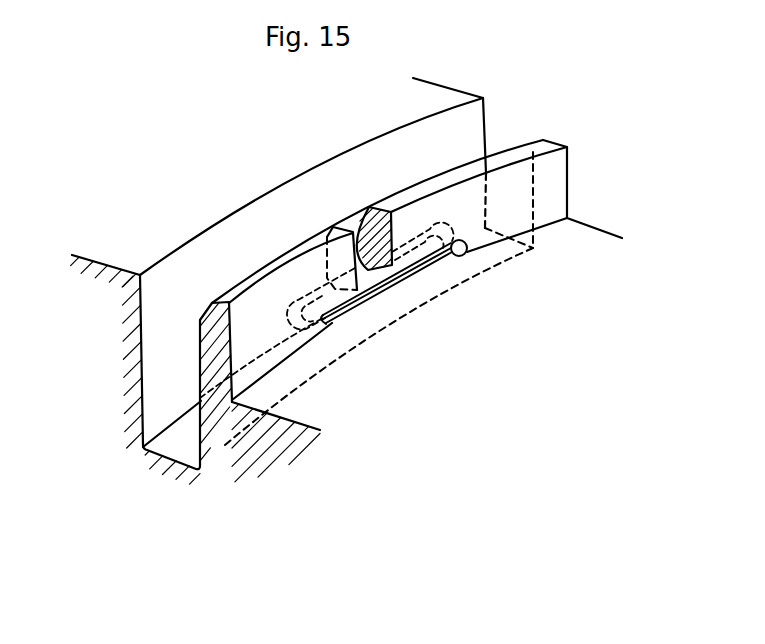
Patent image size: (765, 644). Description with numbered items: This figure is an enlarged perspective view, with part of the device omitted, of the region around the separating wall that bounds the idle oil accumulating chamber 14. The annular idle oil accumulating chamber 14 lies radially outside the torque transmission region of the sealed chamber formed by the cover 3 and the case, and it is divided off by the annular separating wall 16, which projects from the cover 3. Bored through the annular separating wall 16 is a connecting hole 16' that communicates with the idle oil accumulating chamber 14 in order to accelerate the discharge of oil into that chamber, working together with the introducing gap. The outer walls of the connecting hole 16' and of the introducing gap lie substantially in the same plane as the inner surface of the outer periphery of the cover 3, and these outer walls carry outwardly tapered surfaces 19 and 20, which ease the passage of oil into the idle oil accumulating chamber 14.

The cover 3 is at (175, 232).
The idle oil accumulating chamber 14 is at (328, 175).
The annular separating wall 16 is at (423, 292).
The connecting hole 16' is at (333, 310).
The outwardly tapered surface 19 is at (360, 273).
The outwardly tapered surface 20 is at (207, 312).